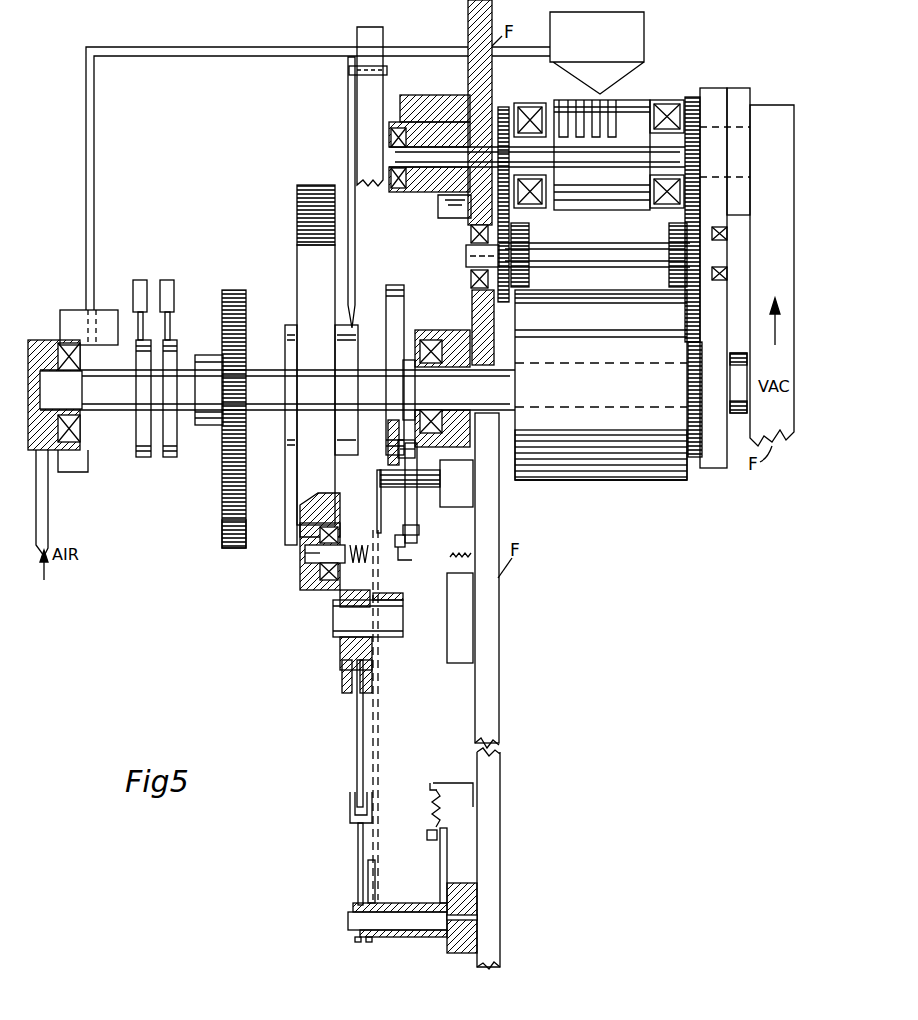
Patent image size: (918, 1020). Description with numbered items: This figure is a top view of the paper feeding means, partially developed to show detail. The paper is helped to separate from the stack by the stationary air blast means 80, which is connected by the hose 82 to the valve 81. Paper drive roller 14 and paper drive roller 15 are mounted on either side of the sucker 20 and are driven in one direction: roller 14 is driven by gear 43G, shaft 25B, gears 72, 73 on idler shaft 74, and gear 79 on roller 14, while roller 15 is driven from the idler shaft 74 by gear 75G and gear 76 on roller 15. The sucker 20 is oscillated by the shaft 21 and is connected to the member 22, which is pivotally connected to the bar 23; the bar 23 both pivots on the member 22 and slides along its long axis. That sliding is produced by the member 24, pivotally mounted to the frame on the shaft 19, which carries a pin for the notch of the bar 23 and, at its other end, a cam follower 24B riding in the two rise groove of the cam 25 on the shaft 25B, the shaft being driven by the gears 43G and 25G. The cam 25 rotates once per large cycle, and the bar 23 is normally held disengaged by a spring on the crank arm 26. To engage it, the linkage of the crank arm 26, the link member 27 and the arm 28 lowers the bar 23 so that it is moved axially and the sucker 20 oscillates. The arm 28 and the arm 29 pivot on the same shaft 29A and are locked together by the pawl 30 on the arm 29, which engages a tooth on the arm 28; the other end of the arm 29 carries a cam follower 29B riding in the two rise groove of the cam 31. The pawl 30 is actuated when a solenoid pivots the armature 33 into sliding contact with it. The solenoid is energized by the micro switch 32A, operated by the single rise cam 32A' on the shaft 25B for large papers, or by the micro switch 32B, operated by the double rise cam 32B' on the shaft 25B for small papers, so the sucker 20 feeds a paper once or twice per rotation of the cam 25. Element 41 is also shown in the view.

The hose 82 is at (172, 57).
The member 22 is at (442, 47).
The stationary air blast means 80 is at (645, 58).
The gear 76 is at (503, 107).
The paper drive roller 15 is at (526, 103).
The paper drive roller 14 is at (660, 100).
The gear 79 is at (692, 97).
The bar 23 is at (347, 100).
The shaft 21 is at (432, 128).
The sucker 20 is at (615, 176).
The gear 75G is at (515, 223).
The idler shaft 74 is at (562, 246).
The gear 73 is at (672, 223).
The micro switch 32A is at (122, 301).
The micro switch 32B is at (186, 301).
The gear 25G is at (248, 326).
The cam 31 is at (386, 322).
The valve 81 is at (80, 312).
The shaft 25B is at (580, 410).
The single rise cam 32A' is at (125, 409).
The double rise cam 32B' is at (188, 409).
The gear 43G is at (222, 512).
The cam 25 is at (297, 498).
The cam follower 29B is at (388, 458).
The shaft 29A is at (380, 482).
The link member 27 is at (373, 530).
The arm 28 is at (422, 518).
The pawl 30 is at (432, 540).
The arm 29 is at (395, 540).
The armature 33 is at (408, 562).
The cam follower 24B is at (300, 572).
The member 24 is at (340, 650).
The shaft 19 is at (333, 622).
The crank arm 26 is at (378, 900).
The housing 41 is at (676, 500).
The gear 72 is at (700, 462).